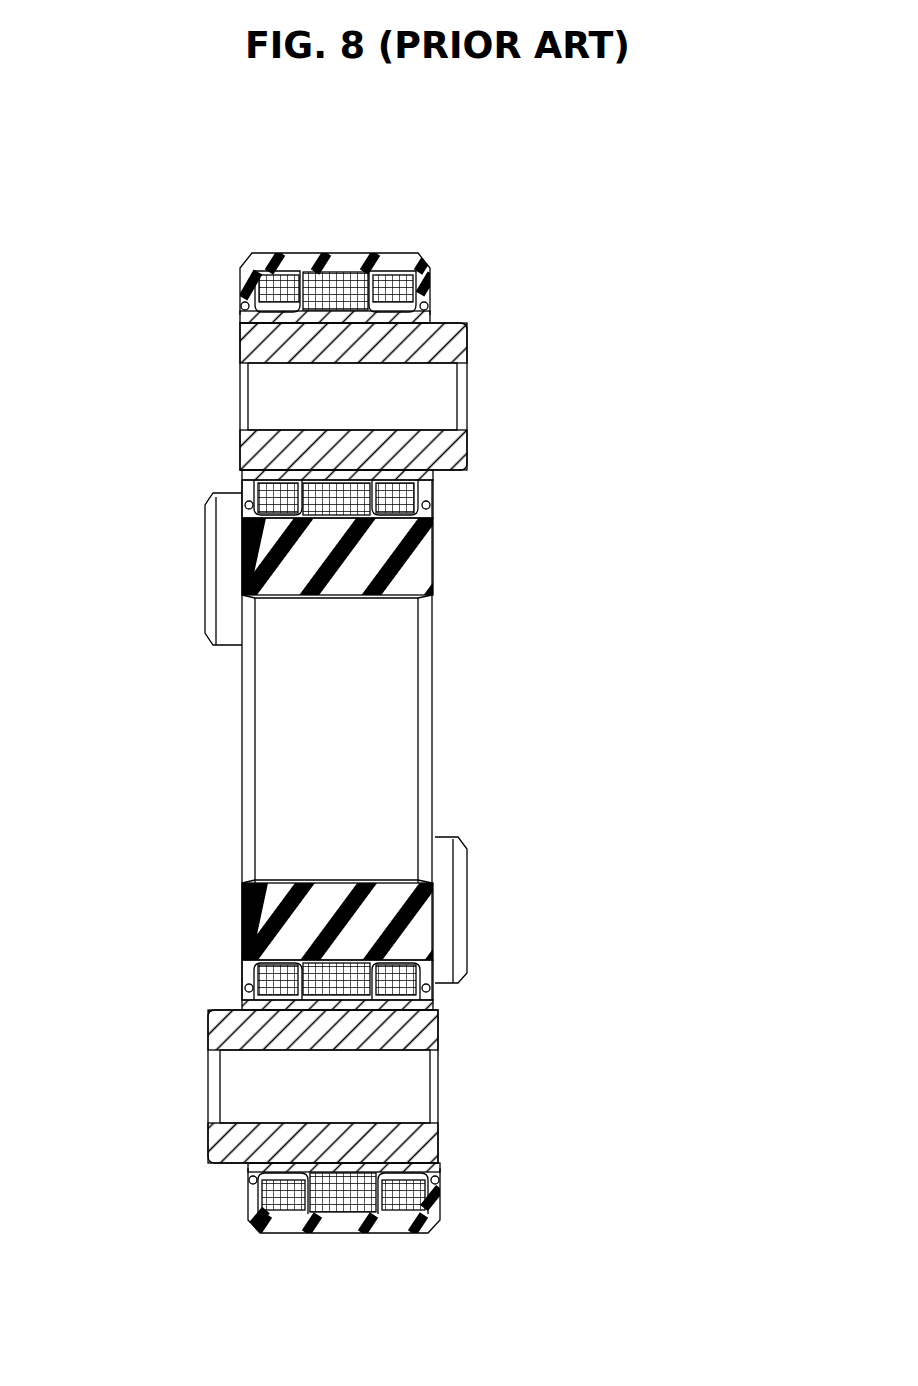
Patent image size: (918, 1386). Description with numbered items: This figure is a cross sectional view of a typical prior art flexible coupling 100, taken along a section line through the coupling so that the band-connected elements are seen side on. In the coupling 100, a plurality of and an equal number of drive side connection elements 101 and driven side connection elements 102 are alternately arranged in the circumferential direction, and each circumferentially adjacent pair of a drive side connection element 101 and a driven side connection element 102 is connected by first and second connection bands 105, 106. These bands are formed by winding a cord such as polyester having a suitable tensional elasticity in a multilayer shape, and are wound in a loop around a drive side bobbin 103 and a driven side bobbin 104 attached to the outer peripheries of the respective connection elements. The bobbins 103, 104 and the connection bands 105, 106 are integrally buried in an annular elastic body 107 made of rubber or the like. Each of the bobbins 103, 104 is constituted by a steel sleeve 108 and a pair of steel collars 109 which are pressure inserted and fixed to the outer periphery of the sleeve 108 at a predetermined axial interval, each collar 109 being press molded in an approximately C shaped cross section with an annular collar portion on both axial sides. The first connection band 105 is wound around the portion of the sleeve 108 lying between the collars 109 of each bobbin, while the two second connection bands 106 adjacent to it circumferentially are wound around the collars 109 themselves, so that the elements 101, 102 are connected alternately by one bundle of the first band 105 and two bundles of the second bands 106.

The flexible coupling 100 is at (198, 293).
The drive side connection element 101 is at (478, 340).
The driven side connection element 102 is at (215, 1143).
The drive side bobbin 103 is at (435, 305).
The driven side bobbin 104 is at (240, 1178).
The first connection band 105 is at (343, 272).
The second connection band 106 is at (278, 275).
The annular elastic body 107 is at (420, 565).
The steel sleeve 108 is at (305, 470).
The steel collar 109 is at (258, 505).